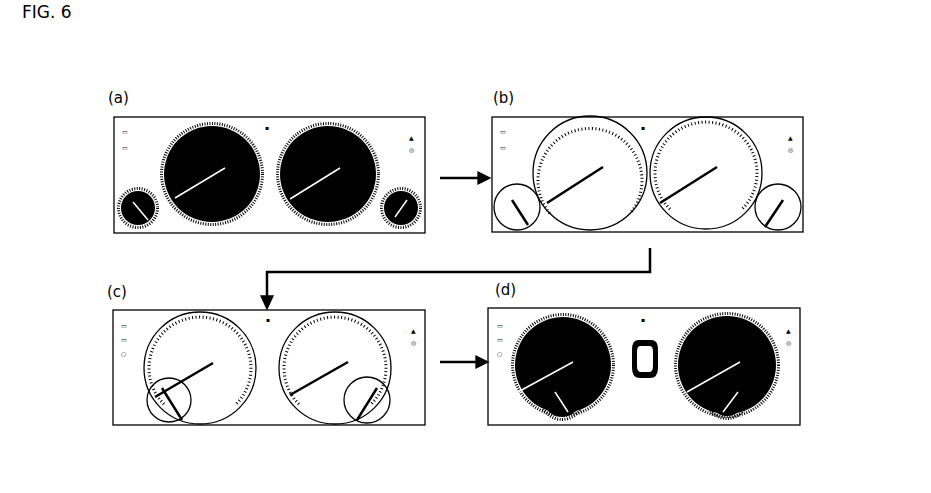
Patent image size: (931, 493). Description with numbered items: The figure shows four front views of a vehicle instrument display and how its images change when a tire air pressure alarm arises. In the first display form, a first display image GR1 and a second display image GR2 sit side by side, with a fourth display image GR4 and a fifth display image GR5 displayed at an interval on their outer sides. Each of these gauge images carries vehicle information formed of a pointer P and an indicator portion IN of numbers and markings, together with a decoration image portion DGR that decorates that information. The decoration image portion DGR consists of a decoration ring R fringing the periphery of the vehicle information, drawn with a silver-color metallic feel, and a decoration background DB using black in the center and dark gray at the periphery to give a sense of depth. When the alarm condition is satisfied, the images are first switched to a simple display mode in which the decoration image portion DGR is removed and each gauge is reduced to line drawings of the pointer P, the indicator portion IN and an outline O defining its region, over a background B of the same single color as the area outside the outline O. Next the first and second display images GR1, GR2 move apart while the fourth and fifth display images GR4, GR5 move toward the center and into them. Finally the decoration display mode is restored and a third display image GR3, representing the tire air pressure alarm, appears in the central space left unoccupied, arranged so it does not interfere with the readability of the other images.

The first display image GR1 is at (532, 258).
The second display image GR2 is at (188, 117).
The third display image GR3 is at (640, 400).
The fourth display image GR4 is at (160, 222).
The fifth display image GR5 is at (415, 187).
The indicator portion IN is at (317, 125).
The decoration image portion DGR is at (363, 133).
The decoration background DB is at (360, 142).
The decoration ring R is at (377, 157).
The pointer P is at (287, 200).
The outline O is at (748, 145).
The background B is at (700, 172).